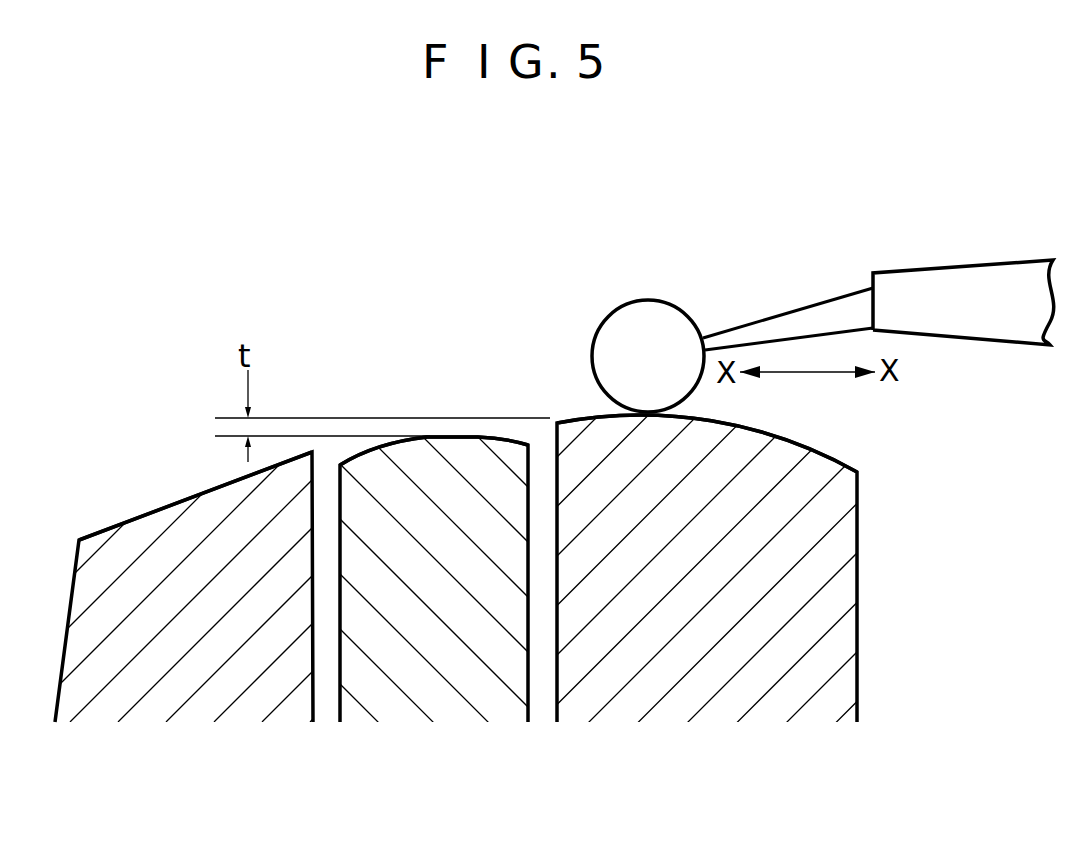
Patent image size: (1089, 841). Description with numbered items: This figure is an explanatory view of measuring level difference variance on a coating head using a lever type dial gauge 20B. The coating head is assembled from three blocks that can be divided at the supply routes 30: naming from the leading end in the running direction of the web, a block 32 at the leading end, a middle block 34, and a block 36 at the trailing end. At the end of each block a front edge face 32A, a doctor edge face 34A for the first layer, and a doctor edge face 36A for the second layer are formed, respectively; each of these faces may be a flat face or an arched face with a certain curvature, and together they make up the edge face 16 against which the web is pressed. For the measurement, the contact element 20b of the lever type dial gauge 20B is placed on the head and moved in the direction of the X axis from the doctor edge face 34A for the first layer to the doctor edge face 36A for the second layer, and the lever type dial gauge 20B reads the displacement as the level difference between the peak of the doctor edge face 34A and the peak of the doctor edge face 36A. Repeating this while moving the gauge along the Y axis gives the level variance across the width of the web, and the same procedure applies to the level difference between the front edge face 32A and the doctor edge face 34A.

The edge face 16 is at (420, 398).
The contact element 20b is at (651, 325).
The lever type dial gauge 20B is at (978, 317).
The supply routes 30 is at (328, 700).
The block at the leading end 32 is at (187, 678).
The front edge face 32A is at (177, 500).
The middle block 34 is at (422, 685).
The doctor edge face for a first layer 34A is at (483, 436).
The block at the trailing end 36 is at (702, 690).
The doctor edge face for a second layer 36A is at (735, 432).